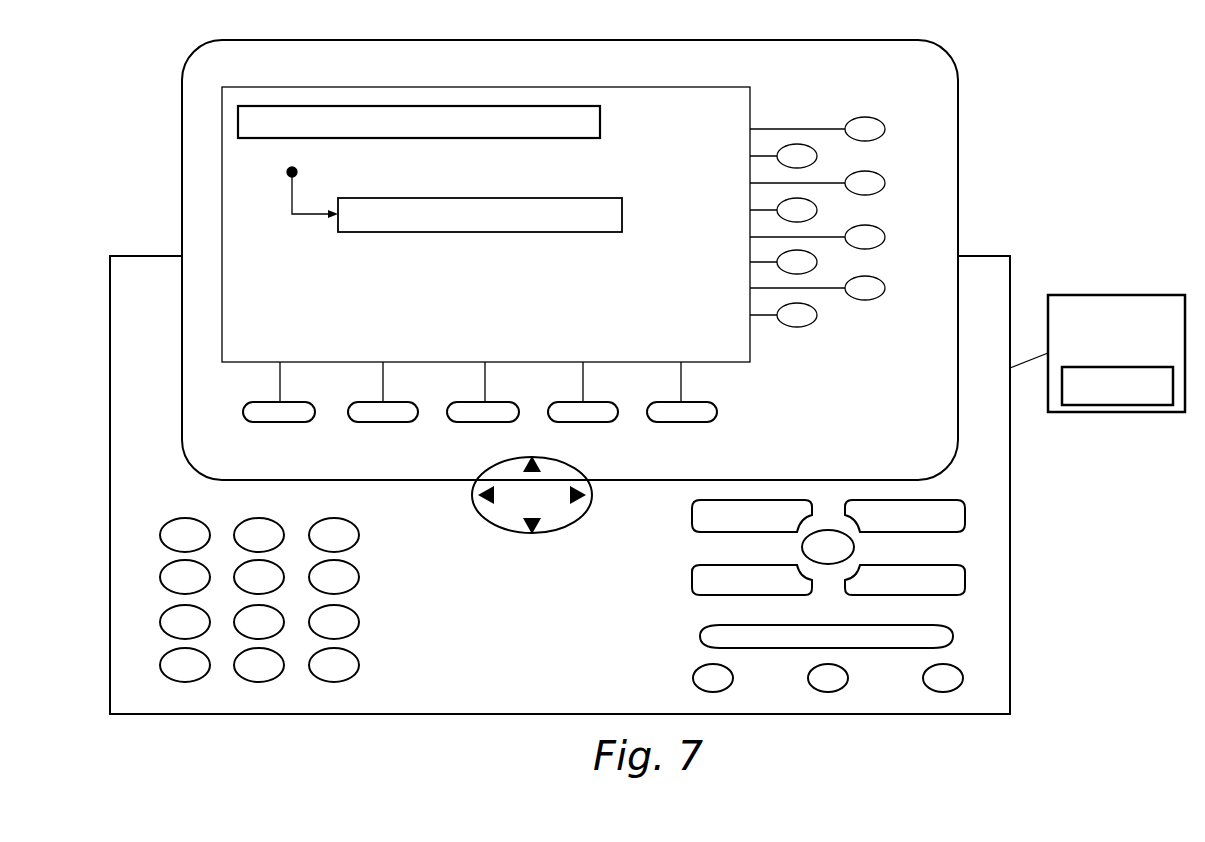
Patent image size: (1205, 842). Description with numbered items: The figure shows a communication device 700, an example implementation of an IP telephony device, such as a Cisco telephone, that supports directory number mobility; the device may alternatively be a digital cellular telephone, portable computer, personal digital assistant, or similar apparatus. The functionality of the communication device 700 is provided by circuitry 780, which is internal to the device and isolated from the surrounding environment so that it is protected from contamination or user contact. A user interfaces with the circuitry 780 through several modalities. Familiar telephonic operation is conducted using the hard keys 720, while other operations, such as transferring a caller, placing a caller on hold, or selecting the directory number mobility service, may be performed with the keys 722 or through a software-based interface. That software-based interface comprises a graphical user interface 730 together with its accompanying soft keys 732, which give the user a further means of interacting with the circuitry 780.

The communication device 700 is at (148, 137).
The hard keys 720 is at (138, 508).
The keys 722 is at (982, 528).
The graphical user interface 730 is at (958, 119).
The soft keys 732 is at (880, 107).
The circuitry 780 is at (1118, 293).